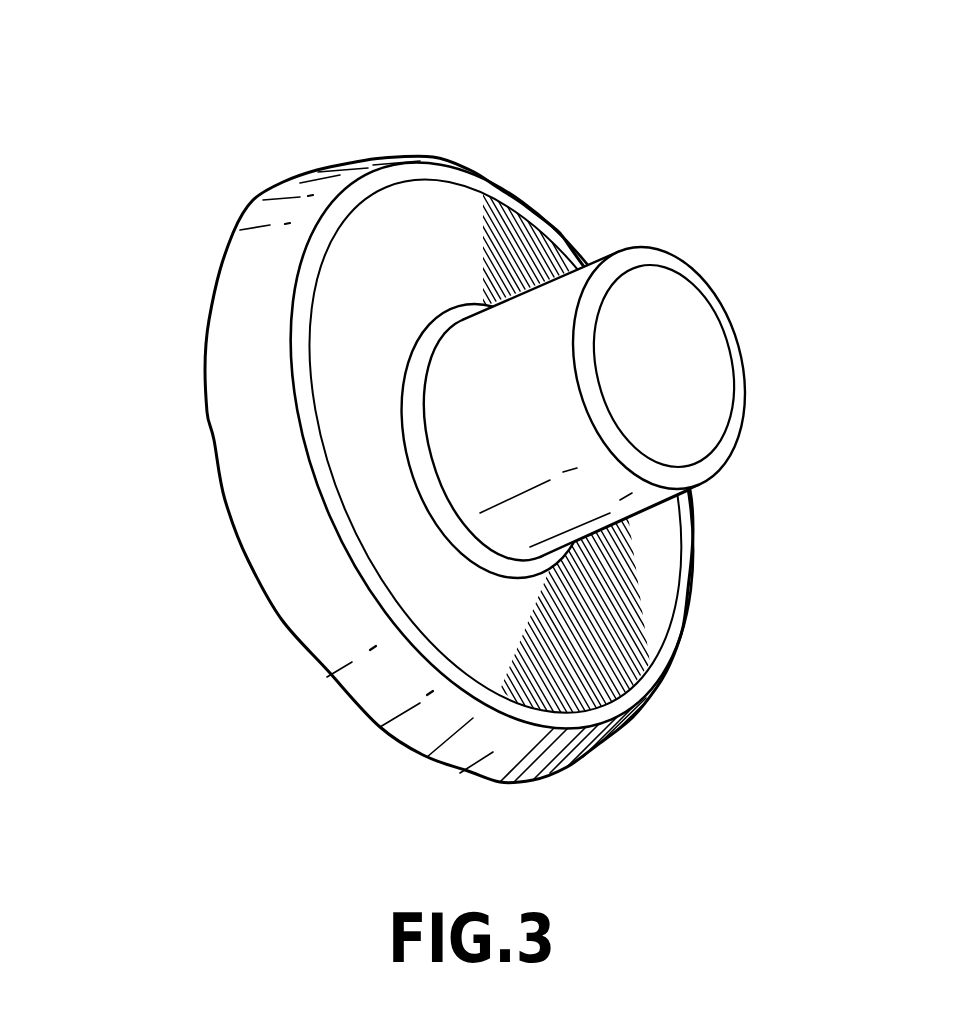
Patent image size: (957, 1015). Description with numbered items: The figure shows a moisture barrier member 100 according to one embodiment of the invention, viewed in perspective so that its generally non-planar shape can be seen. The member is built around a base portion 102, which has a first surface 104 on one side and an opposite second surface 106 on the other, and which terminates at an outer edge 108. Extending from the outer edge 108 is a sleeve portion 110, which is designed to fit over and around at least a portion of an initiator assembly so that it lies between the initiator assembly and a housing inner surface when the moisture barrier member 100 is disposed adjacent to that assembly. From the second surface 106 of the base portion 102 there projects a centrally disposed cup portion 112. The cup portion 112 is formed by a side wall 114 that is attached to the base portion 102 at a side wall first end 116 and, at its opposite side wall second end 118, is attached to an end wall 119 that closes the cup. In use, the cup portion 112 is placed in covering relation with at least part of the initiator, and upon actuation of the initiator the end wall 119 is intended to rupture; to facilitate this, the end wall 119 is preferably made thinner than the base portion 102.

The moisture barrier member 100 is at (466, 407).
The base portion 102 is at (448, 222).
The first surface 104 is at (438, 424).
The second surface 106 is at (520, 235).
The outer edge 108 is at (693, 535).
The sleeve portion 110 is at (207, 412).
The cup portion 112 is at (634, 374).
The side wall 114 is at (537, 310).
The side wall first end 116 is at (427, 388).
The side wall second end 118 is at (743, 410).
The end wall 119 is at (707, 372).